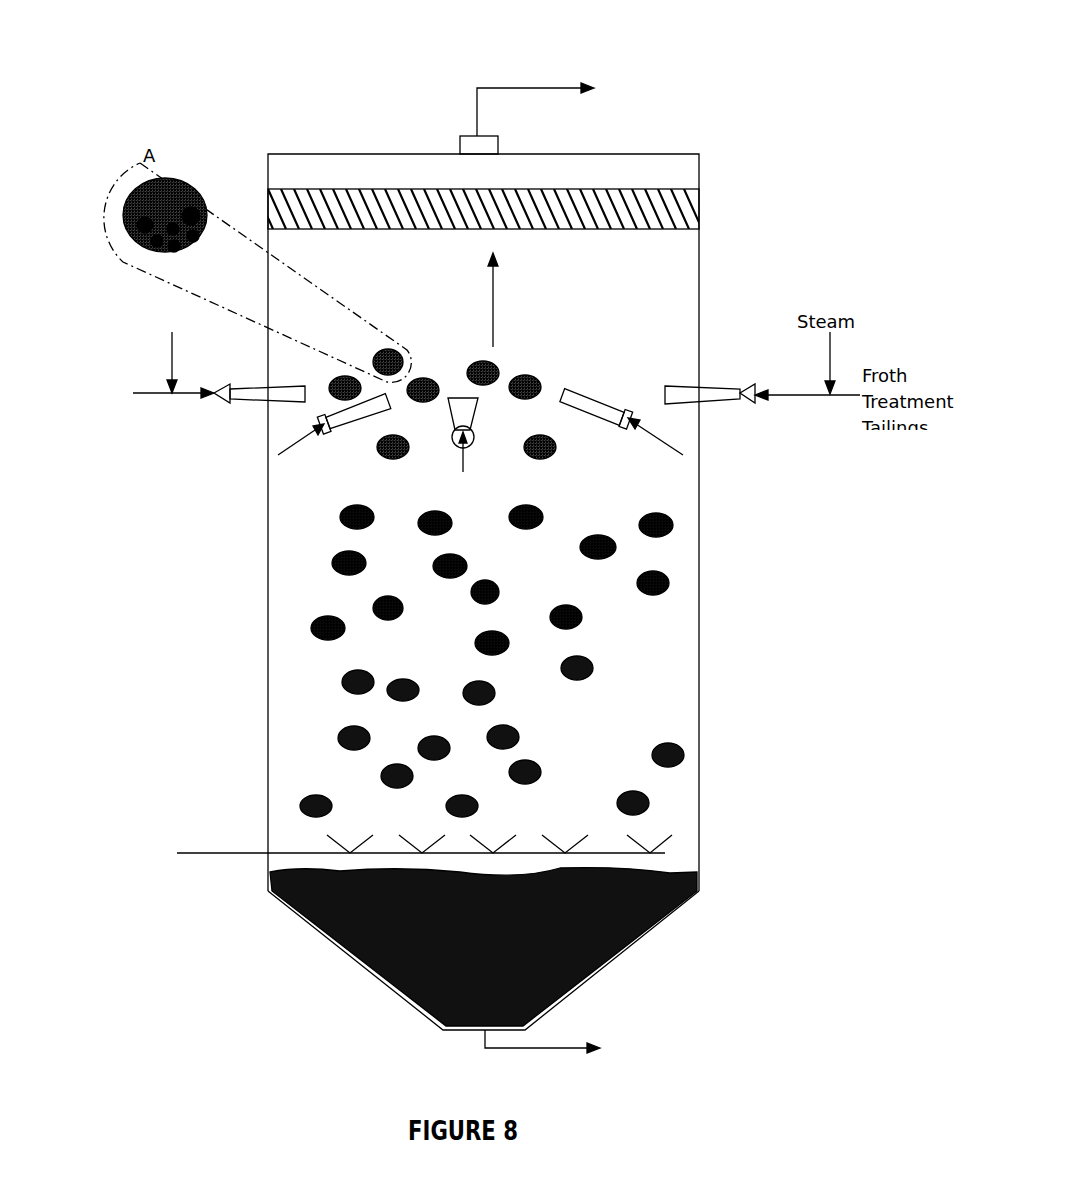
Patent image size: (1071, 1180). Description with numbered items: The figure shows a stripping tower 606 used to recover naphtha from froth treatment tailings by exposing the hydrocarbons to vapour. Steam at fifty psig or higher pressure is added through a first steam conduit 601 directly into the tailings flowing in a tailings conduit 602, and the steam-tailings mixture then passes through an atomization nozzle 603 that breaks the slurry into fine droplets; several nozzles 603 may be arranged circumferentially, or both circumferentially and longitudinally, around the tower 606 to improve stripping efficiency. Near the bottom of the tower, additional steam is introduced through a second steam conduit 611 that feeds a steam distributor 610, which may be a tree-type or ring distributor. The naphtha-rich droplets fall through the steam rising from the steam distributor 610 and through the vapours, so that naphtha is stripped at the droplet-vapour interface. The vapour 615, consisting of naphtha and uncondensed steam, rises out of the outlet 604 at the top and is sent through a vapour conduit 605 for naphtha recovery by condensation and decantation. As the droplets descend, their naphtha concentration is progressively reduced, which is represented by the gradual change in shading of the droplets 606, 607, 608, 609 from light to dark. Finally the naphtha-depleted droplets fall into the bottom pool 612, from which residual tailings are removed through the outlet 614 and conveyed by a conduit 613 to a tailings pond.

The first steam conduit 601 is at (172, 363).
The tailings conduit 602 is at (157, 397).
The atomization nozzle 603 is at (242, 398).
The outlet 604 is at (470, 122).
The vapour conduit 605 is at (519, 86).
The stripping tower 606 is at (700, 265).
The droplets 607 is at (497, 582).
The droplets 608 is at (590, 658).
The droplets 609 is at (540, 765).
The steam distributor 610 is at (672, 842).
The second steam conduit 611 is at (230, 855).
The bottom pool 612 is at (623, 940).
The conduit 613 is at (552, 1047).
The outlet 614 is at (473, 1032).
The vapour 615 is at (700, 200).